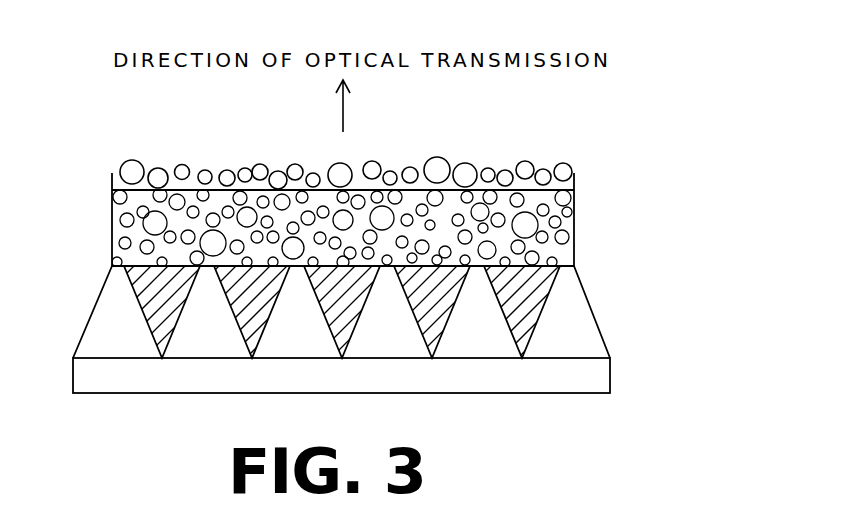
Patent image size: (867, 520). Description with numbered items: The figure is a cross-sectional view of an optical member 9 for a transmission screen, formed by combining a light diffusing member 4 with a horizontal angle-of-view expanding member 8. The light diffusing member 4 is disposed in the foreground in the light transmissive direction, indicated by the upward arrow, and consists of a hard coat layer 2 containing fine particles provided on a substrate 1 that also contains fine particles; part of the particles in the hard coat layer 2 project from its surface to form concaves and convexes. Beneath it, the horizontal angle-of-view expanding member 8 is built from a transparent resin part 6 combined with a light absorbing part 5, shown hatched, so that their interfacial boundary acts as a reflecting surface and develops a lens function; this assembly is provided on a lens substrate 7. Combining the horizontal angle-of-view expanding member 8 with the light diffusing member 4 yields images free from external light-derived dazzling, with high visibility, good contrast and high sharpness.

The substrate 1 is at (566, 224).
The hard coat layer 2 is at (565, 184).
The light diffusing member 4 is at (101, 160).
The light absorbing part 5 is at (528, 295).
The transparent resin part 6 is at (582, 335).
The lens substrate 7 is at (593, 380).
The horizontal angle-of-view expanding member 8 is at (64, 267).
The optical member 9 is at (639, 154).